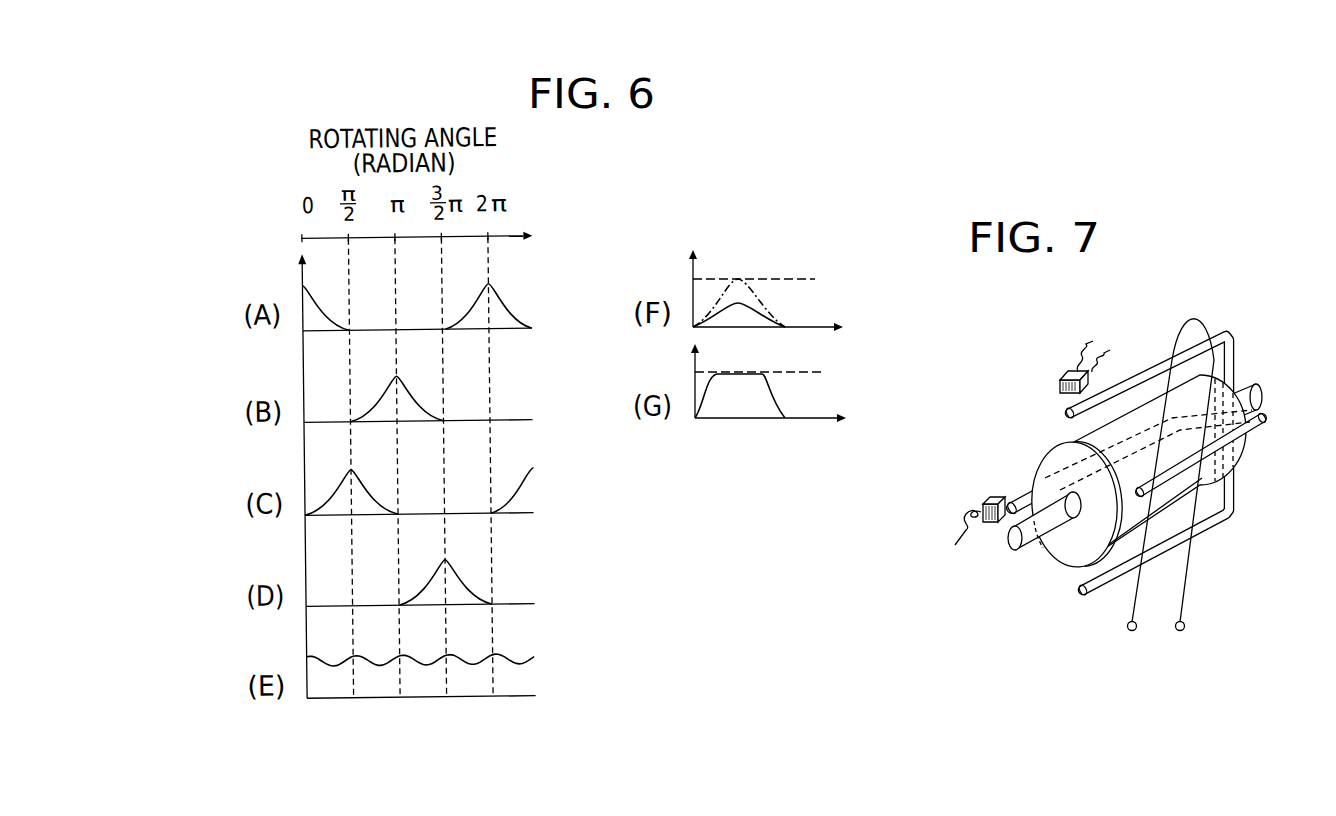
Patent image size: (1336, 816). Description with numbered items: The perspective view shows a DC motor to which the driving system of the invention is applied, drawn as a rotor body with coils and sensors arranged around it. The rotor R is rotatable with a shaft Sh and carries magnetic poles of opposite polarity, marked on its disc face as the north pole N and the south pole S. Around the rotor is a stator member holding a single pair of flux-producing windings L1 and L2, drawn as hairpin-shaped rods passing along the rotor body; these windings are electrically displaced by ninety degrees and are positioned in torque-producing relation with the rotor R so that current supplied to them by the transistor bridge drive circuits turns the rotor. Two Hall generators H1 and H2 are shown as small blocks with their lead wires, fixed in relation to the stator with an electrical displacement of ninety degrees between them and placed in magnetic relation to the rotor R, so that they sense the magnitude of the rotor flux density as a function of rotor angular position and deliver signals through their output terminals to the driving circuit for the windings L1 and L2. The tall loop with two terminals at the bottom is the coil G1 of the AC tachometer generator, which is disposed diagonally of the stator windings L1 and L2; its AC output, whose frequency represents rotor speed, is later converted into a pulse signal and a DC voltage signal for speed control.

The rotor R is at (1063, 552).
The shaft Sh is at (1025, 547).
The north magnetic pole N is at (1044, 494).
The south magnetic pole S is at (1103, 502).
The stator winding L1 is at (1201, 457).
The stator winding L2 is at (1153, 372).
The coil of the tachometer generator G1 is at (1197, 322).
The Hall generator H1 is at (993, 497).
The Hall generator H2 is at (1060, 384).